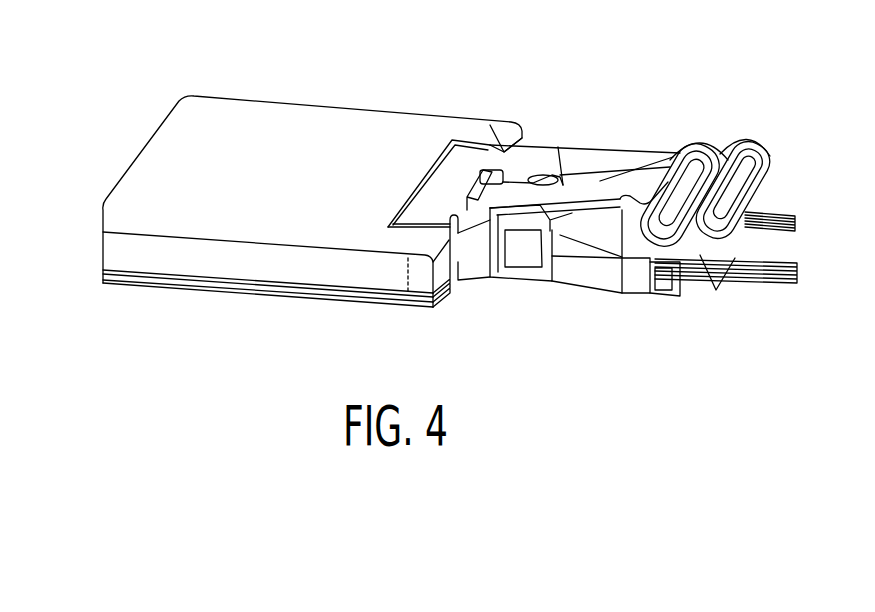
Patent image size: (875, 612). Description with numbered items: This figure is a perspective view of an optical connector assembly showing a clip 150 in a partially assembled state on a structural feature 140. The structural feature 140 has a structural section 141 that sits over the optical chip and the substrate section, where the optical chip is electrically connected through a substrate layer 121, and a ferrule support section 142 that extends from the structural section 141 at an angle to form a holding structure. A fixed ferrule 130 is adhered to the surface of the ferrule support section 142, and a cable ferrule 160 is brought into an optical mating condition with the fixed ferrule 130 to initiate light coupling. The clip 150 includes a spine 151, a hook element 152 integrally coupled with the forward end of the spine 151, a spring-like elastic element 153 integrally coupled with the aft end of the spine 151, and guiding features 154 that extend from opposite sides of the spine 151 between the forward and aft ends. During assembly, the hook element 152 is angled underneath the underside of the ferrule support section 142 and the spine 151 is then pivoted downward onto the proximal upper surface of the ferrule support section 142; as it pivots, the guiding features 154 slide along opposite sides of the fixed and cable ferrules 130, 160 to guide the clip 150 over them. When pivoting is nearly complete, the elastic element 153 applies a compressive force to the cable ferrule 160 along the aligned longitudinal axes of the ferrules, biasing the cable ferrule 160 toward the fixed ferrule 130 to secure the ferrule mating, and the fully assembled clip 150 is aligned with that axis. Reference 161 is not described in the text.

The substrate layer 121 is at (222, 288).
The fixed ferrule 130 is at (508, 273).
The structural feature 140 is at (163, 270).
The structural section 141 is at (322, 121).
The ferrule support section 142 is at (528, 225).
The clip 150 is at (780, 158).
The spine 151 is at (597, 187).
The hook element 152 is at (472, 258).
The elastic element 153 is at (735, 265).
The guiding features 154 is at (565, 225).
The cable ferrule 160 is at (592, 278).
The cable bundle 161 is at (787, 263).